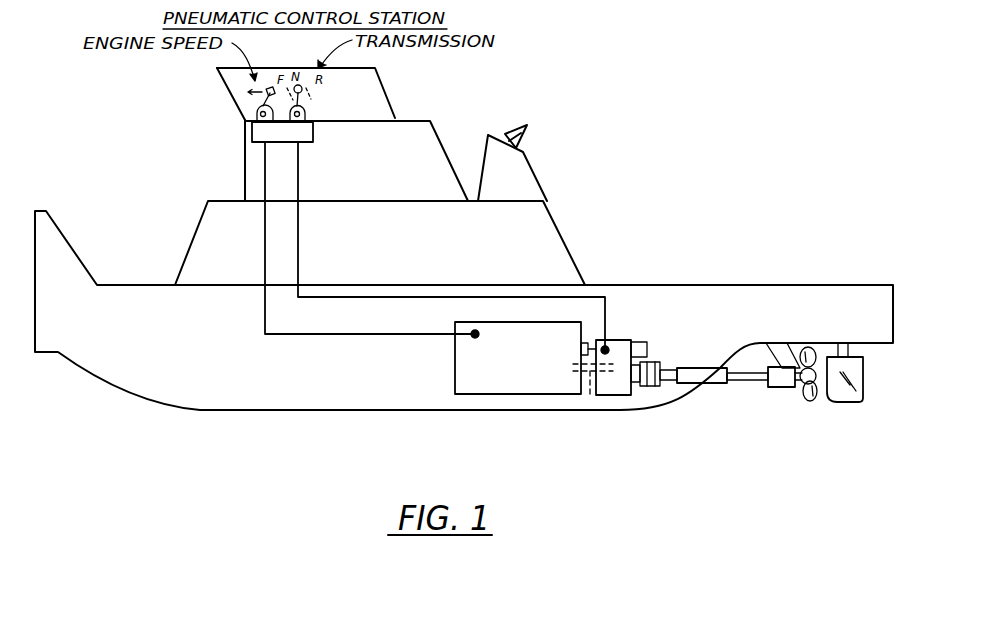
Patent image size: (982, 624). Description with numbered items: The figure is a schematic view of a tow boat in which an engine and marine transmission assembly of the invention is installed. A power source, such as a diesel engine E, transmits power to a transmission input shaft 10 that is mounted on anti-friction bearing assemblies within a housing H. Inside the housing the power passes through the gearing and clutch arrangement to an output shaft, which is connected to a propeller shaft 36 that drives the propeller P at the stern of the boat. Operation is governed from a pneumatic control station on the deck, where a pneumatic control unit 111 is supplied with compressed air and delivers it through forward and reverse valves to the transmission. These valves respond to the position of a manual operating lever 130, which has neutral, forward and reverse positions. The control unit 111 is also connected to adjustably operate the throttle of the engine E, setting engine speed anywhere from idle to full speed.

The manual operating lever 130 is at (305, 101).
The pneumatic control unit 111 is at (313, 116).
The engine E is at (455, 363).
The housing H is at (618, 342).
The transmission input shaft 10 is at (590, 394).
The propeller shaft 36 is at (750, 382).
The propeller P is at (815, 400).